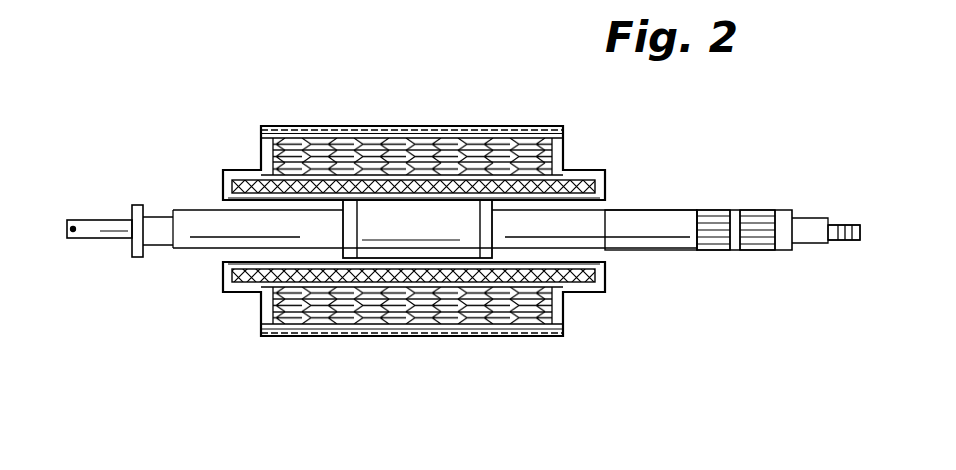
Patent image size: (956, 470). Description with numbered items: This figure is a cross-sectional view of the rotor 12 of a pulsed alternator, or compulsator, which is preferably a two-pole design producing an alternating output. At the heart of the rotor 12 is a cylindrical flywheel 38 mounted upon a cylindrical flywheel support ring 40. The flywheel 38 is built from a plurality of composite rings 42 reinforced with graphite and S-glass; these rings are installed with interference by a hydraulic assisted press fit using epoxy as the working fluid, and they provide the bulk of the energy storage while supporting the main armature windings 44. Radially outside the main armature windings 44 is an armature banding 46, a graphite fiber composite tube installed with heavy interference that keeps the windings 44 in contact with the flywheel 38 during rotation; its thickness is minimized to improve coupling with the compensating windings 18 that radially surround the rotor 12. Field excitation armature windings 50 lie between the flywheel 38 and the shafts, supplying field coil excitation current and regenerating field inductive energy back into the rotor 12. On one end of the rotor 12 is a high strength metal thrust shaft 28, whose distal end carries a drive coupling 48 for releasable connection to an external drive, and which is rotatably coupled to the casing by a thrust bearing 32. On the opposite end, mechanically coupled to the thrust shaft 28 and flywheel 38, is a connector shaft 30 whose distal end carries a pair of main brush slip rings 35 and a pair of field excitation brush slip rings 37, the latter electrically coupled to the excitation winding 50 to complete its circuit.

The rotor 12 is at (250, 128).
The compensating windings 18 is at (460, 128).
The cylindrical flywheel 38 is at (318, 150).
The armature banding 46 is at (357, 142).
The main armature windings 44 is at (412, 136).
The field excitation armature windings 50 is at (580, 182).
The thrust shaft 28 is at (98, 238).
The drive coupling 48 is at (74, 219).
The thrust bearing 32 is at (138, 205).
The cylindrical flywheel support ring 40 is at (372, 231).
The main brush slip rings 35 is at (753, 211).
The field excitation brush slip rings 37 is at (857, 225).
The connector shaft 30 is at (793, 255).
The composite rings 42 is at (333, 307).